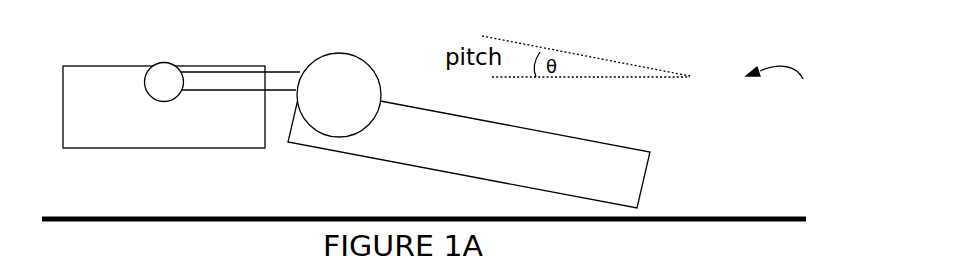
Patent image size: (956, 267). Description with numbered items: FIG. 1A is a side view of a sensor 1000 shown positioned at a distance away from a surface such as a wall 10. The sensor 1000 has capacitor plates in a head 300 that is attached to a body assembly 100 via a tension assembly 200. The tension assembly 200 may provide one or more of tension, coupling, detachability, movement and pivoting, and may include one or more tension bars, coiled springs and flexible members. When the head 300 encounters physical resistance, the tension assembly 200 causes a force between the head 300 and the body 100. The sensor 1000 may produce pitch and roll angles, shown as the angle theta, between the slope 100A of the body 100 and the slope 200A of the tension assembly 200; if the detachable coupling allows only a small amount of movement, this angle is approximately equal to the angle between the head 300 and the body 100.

The wall 10 is at (744, 217).
The body assembly 100 is at (481, 151).
The slope of body 100A is at (513, 42).
The tension assembly 200 is at (358, 102).
The slope of tension assembly 200A is at (511, 78).
The head 300 is at (130, 112).
The sensor 1000 is at (791, 89).